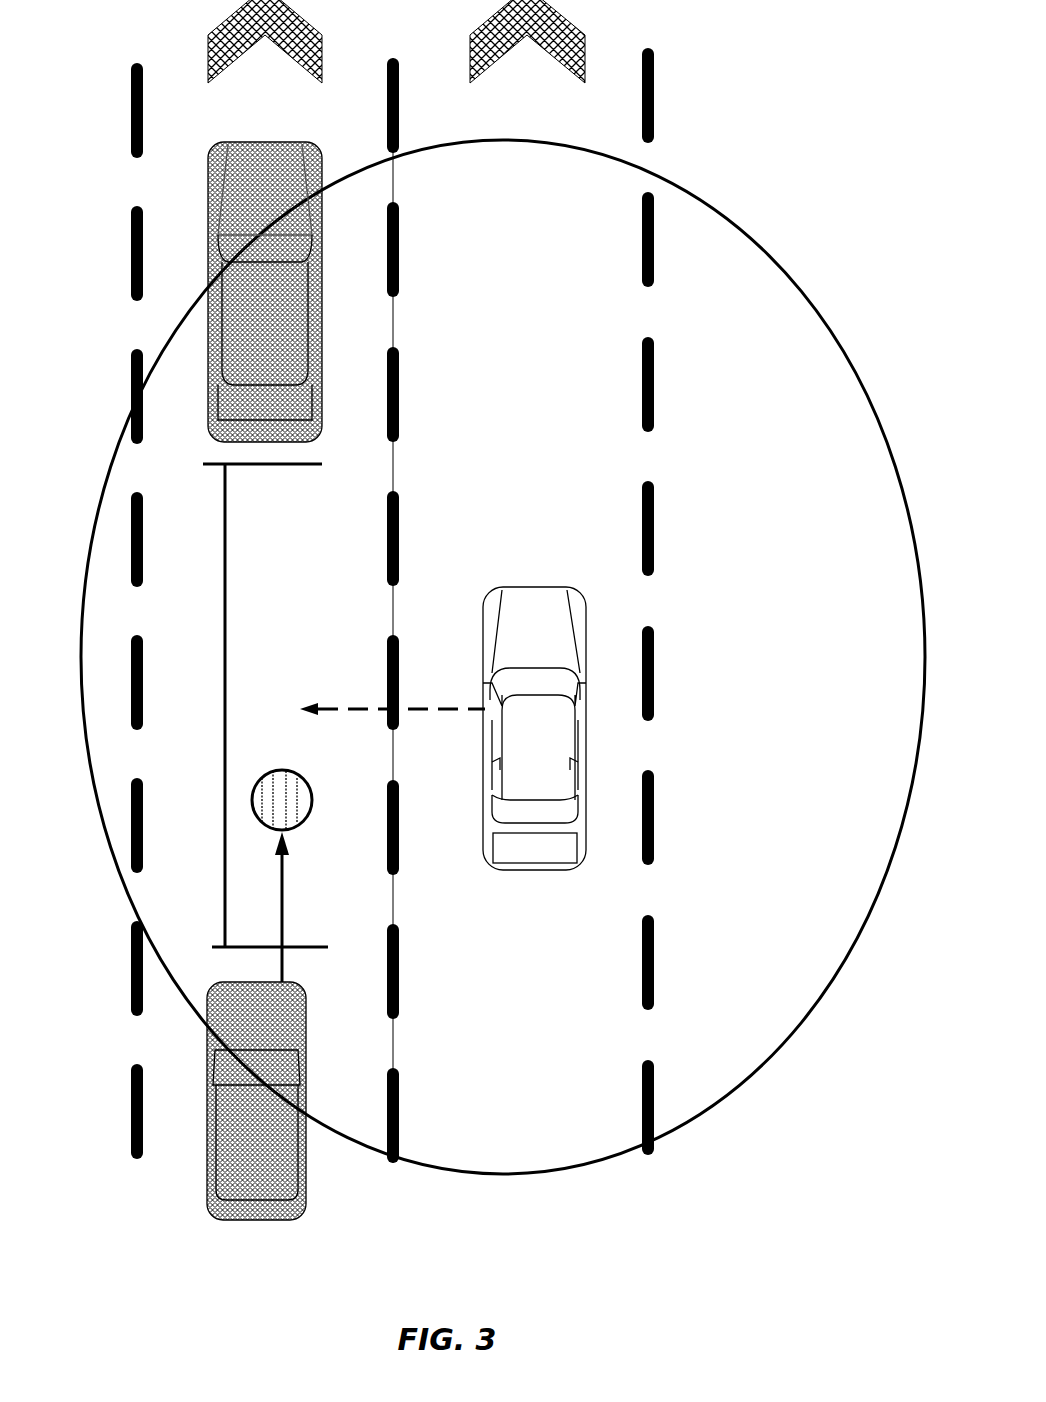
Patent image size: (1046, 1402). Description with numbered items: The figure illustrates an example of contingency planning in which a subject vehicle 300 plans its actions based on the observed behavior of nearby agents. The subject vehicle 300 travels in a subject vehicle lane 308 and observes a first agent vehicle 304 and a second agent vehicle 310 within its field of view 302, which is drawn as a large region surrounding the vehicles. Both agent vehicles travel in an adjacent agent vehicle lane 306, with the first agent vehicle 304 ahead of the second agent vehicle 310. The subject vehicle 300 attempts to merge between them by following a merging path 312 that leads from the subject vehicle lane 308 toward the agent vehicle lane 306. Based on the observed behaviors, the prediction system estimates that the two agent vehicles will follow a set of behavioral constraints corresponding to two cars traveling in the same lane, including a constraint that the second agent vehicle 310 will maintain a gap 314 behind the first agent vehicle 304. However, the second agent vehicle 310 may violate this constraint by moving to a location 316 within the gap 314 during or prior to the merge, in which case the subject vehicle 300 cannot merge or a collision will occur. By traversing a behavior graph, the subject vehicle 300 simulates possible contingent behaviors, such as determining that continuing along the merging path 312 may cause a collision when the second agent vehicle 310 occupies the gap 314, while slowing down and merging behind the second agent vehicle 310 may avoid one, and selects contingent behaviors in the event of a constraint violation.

The subject vehicle 300 is at (534, 728).
The field of view 302 is at (833, 332).
The first agent vehicle 304 is at (265, 292).
The agent vehicle lane 306 is at (163, 611).
The subject vehicle lane 308 is at (418, 610).
The second agent vehicle 310 is at (256, 1101).
The merging path 312 is at (408, 709).
The gap 314 is at (225, 568).
The location 316 is at (282, 770).